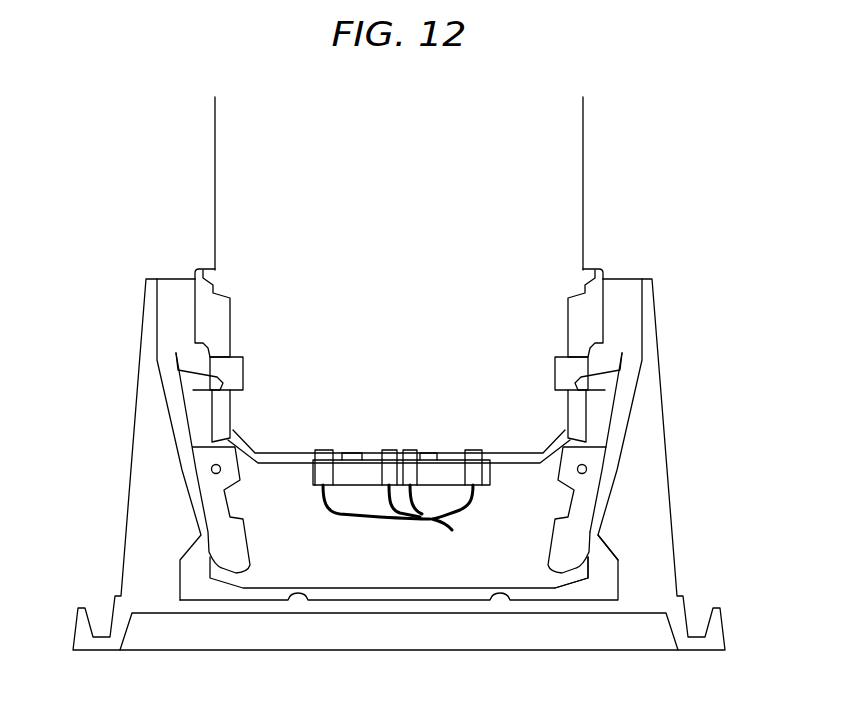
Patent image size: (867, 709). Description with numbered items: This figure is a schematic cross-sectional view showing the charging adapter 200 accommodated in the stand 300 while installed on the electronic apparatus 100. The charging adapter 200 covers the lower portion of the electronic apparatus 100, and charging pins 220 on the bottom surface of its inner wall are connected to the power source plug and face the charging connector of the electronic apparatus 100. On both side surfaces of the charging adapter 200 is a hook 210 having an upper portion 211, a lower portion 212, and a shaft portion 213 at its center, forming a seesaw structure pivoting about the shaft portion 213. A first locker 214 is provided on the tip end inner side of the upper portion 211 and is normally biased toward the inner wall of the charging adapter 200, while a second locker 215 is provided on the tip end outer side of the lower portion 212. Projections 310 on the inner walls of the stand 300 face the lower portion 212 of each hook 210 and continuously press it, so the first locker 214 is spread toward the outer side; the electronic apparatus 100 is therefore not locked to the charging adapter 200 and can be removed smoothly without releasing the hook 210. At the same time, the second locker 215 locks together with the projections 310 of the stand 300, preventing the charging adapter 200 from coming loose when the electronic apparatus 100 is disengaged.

The electronic apparatus 100 is at (550, 141).
The charging adapter 200 is at (605, 277).
The hook 210 is at (620, 355).
The upper portion 211 is at (620, 398).
The lower portion 212 is at (600, 497).
The shaft portion 213 is at (588, 470).
The first locker 214 is at (597, 377).
The second locker 215 is at (613, 555).
The charging pins 220 is at (323, 453).
The stand 300 is at (143, 318).
The projections 310 is at (188, 538).